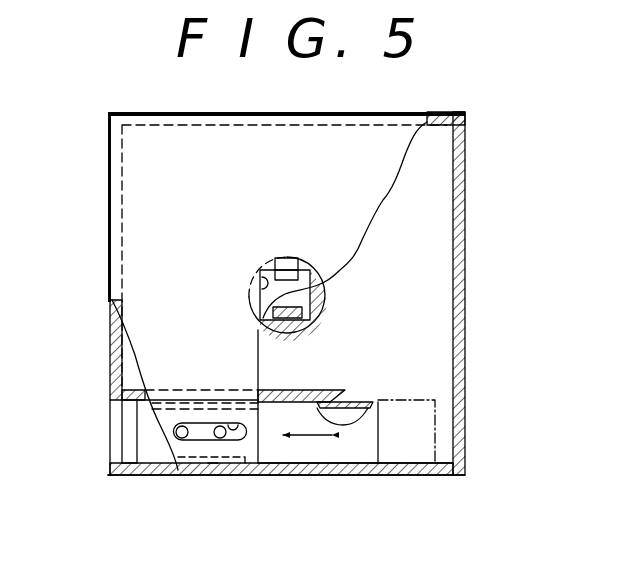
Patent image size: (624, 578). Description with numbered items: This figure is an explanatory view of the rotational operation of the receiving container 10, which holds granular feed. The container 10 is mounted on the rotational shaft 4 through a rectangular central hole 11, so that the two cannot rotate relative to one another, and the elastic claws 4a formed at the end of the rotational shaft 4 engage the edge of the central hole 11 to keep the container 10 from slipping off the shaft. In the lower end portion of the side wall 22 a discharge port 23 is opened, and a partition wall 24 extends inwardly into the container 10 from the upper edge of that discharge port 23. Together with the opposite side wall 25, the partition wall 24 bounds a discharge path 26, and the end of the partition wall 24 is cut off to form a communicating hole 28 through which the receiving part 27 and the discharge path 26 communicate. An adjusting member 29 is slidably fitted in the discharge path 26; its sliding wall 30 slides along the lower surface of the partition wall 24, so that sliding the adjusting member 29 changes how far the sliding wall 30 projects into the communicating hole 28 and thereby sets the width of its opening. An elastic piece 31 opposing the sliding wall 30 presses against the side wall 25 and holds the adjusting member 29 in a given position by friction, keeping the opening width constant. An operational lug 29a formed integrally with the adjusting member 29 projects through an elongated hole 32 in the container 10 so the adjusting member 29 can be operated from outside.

The rotational shaft 4 is at (308, 303).
The elastic claws 4a is at (280, 258).
The receiving container 10 is at (470, 242).
The central hole 11 is at (260, 270).
The side wall 22 is at (112, 328).
The discharge port 23 is at (122, 403).
The partition wall 24 is at (320, 388).
The side wall 25 is at (322, 470).
The discharge path 26 is at (120, 448).
The receiving part 27 is at (437, 178).
The communicating hole 28 is at (345, 392).
The adjusting member 29 is at (360, 450).
The operational lug 29a is at (180, 440).
The sliding wall 30 is at (362, 402).
The elastic piece 31 is at (213, 458).
The elongated hole 32 is at (237, 423).